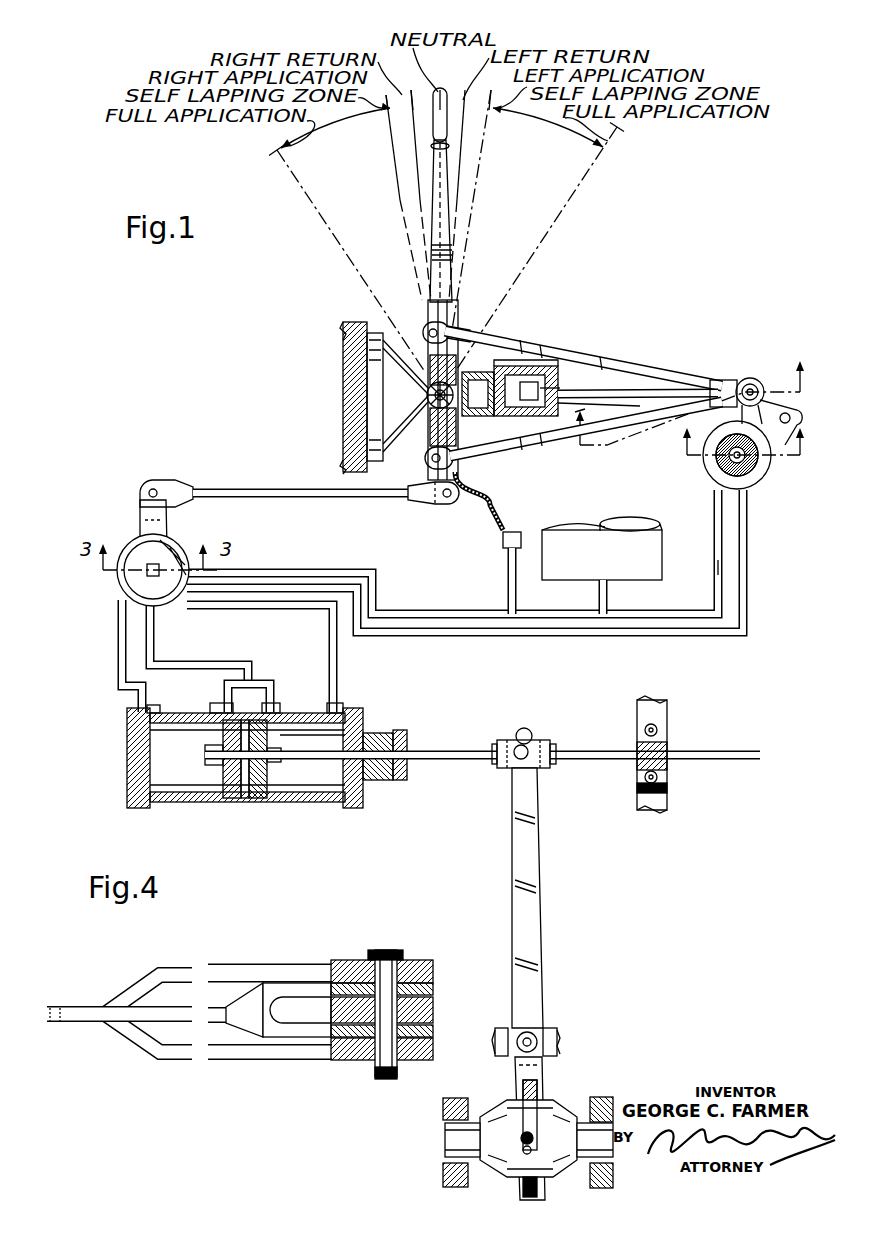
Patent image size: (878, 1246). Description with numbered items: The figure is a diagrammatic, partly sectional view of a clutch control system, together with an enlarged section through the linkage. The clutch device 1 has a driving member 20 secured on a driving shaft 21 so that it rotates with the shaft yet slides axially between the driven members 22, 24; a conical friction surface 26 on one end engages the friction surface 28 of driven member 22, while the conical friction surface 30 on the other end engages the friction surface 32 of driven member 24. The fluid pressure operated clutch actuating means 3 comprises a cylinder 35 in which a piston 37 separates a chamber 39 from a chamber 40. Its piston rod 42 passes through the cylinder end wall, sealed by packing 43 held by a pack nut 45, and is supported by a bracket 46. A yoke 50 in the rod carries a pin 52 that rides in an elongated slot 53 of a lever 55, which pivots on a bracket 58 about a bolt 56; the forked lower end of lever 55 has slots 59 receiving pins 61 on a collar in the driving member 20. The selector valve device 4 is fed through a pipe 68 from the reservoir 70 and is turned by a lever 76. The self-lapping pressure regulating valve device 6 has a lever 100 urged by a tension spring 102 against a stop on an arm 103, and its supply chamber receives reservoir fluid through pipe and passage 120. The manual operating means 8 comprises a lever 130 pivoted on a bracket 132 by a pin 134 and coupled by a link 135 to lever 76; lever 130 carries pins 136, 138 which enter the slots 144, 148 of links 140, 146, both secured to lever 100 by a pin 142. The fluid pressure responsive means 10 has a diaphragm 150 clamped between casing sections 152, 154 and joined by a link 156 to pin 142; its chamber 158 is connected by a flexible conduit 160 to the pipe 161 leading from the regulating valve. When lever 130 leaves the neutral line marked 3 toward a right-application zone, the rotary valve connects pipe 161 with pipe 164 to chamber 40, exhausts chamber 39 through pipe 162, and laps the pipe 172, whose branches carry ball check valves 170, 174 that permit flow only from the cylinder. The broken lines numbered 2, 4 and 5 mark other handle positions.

In FIG. 1, the clutch device 1 is at (397, 150).
In FIG. 1, the handle position / section line 2- 2 is at (414, 150).
In FIG. 1, the fluid pressure operated clutch actuating means 3 is at (437, 150).
In FIG. 1, the selector valve device 4 is at (172, 540).
In FIG. 1, the handle position 5 is at (490, 146).
In FIG. 1, the pressure regulating valve device 6 is at (708, 483).
In FIG. 1, the manual operating means 8 is at (458, 250).
In FIG. 1, the fluid pressure responsive means 10 is at (553, 372).
In FIG. 1, the driving member 20 is at (518, 1178).
In FIG. 1, the driving shaft 21 is at (460, 1138).
In FIG. 1, the driven member 22 is at (443, 1107).
In FIG. 1, the driven member 24 is at (610, 1108).
In FIG. 1, the conical friction surface 26 is at (485, 1115).
In FIG. 1, the friction surface 28 is at (475, 1110).
In FIG. 1, the conical friction surface 30 is at (570, 1112).
In FIG. 1, the friction surface 32 is at (595, 1170).
In FIG. 1, the cylinder 35 is at (185, 800).
In FIG. 1, the piston 37 is at (245, 800).
In FIG. 1, the chamber 39 is at (127, 757).
In FIG. 1, the chamber 40 is at (357, 792).
In FIG. 1, the piston rod 42 is at (478, 760).
In FIG. 1, the packing 43 is at (370, 745).
In FIG. 1, the pack nut 45 is at (400, 740).
In FIG. 1, the bracket 46 is at (668, 793).
In FIG. 1, the yoke 50 is at (550, 764).
In FIG. 1, the pin 52 is at (535, 745).
In FIG. 1, the elongated slot 53 is at (520, 732).
In FIG. 1, the lever 55 is at (533, 902).
In FIG. 1, the bolt 56 is at (542, 1040).
In FIG. 1, the bracket 58 is at (558, 1043).
In FIG. 1, the elongated openings or slots 59 is at (520, 1140).
In FIG. 1, the pins or bolts 61 is at (455, 1165).
In FIG. 1, the pipe 68 is at (457, 614).
In FIG. 1, the reservoir 70 is at (600, 533).
In FIG. 1, the lever 76 is at (140, 522).
In FIG. 1, the lever 100 is at (752, 478).
In FIG. 4, the lever 100 is at (433, 1005).
In FIG. 1, the tension spring 102 is at (775, 395).
In FIG. 1, the arm 103 is at (786, 450).
In FIG. 1, the pipe and passage 120 is at (718, 570).
In FIG. 1, the lever 130 is at (432, 255).
In FIG. 1, the bracket 132 is at (380, 345).
In FIG. 1, the pin 134 is at (397, 397).
In FIG. 1, the link 135 is at (258, 485).
In FIG. 1, the pin 136 is at (452, 333).
In FIG. 1, the pin 138 is at (452, 497).
In FIG. 1, the link 140 is at (585, 352).
In FIG. 4, the link 140 is at (287, 966).
In FIG. 4, the pin 142 is at (380, 955).
In FIG. 1, the elongated openings or slots 144 is at (480, 345).
In FIG. 1, the link 146 is at (664, 418).
In FIG. 4, the link 146 is at (312, 1055).
In FIG. 1, the elongated openings or slots 148 is at (470, 460).
In FIG. 1, the diaphragm 150 is at (555, 410).
In FIG. 1, the casing section 152 is at (463, 386).
In FIG. 1, the casing section 154 is at (583, 404).
In FIG. 1, the link 156 is at (645, 390).
In FIG. 4, the link 156 is at (138, 1010).
In FIG. 1, the chamber 158 is at (530, 366).
In FIG. 1, the flexible conduit 160 is at (503, 538).
In FIG. 1, the pipe 161 is at (470, 640).
In FIG. 1, the pipe 162 is at (120, 660).
In FIG. 1, the pipe 164 is at (334, 690).
In FIG. 1, the ball check valve 170 is at (218, 727).
In FIG. 1, the pipe 172 is at (248, 668).
In FIG. 1, the ball check valve 174 is at (312, 741).